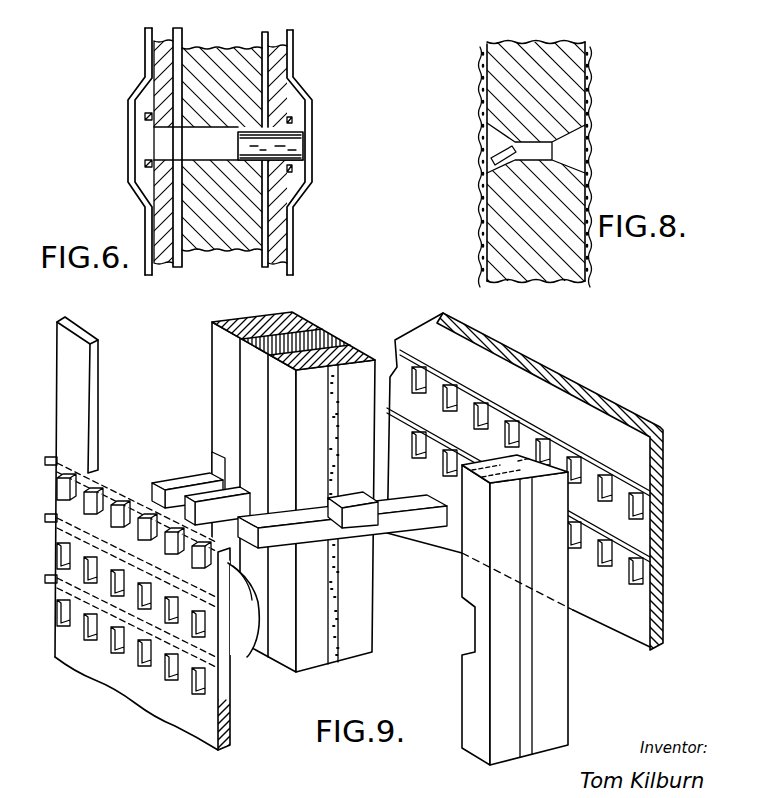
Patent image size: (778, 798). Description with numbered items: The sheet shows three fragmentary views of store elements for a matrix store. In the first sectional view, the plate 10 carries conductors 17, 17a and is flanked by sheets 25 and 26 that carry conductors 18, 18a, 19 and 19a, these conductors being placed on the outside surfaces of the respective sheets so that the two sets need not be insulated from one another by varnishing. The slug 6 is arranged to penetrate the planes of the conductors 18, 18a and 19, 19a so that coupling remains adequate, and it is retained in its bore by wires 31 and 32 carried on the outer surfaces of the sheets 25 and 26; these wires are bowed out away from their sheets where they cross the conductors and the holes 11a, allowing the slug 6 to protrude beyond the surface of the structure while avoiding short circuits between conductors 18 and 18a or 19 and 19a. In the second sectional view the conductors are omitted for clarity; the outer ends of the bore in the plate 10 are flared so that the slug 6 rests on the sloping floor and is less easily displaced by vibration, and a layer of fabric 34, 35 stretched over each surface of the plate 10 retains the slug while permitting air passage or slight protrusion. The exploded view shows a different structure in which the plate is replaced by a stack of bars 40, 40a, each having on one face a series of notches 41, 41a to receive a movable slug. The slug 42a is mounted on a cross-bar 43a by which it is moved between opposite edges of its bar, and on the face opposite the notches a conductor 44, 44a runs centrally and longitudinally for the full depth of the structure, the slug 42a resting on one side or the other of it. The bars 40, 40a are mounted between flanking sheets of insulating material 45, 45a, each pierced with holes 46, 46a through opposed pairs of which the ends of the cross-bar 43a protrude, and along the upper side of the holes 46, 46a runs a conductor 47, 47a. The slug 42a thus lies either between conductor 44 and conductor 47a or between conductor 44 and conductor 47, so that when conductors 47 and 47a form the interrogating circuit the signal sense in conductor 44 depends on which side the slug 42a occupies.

In FIG. 6, the slug 6 is at (297, 147).
In FIG. 8, the slug 6 is at (496, 155).
In FIG. 6, the plate 10 is at (214, 53).
In FIG. 8, the plate 10 is at (547, 52).
In FIG. 6, the hole 11a is at (168, 127).
In FIG. 6, the conductor 17 is at (178, 62).
In FIG. 6, the conductor 17a is at (264, 63).
In FIG. 6, the conductor 18 is at (147, 113).
In FIG. 6, the conductor 18a is at (148, 165).
In FIG. 6, the conductor 19 is at (292, 122).
In FIG. 6, the conductor 19a is at (293, 172).
In FIG. 6, the sheet 25 is at (282, 77).
In FIG. 6, the sheet 26 is at (163, 50).
In FIG. 6, the wire 31 is at (292, 223).
In FIG. 6, the wire 32 is at (145, 217).
In FIG. 8, the layer of fabric 34 is at (480, 105).
In FIG. 8, the layer of fabric 35 is at (591, 92).
In FIG. 9, the bar 40 is at (298, 320).
In FIG. 9, the bar 40a is at (527, 460).
In FIG. 9, the notch 41 is at (214, 456).
In FIG. 9, the notch 41a is at (472, 652).
In FIG. 9, the slug 42a is at (372, 522).
In FIG. 9, the cross-bar 43a is at (212, 503).
In FIG. 9, the conductor 44 is at (285, 338).
In FIG. 9, the conductor 44a is at (527, 562).
In FIG. 9, the sheet of insulating material 45 is at (75, 418).
In FIG. 9, the sheet of insulating material 45a is at (592, 392).
In FIG. 9, the hole 46 is at (145, 533).
In FIG. 9, the hole 46a is at (509, 432).
In FIG. 9, the conductor 47 is at (250, 653).
In FIG. 9, the conductor 47a is at (613, 467).